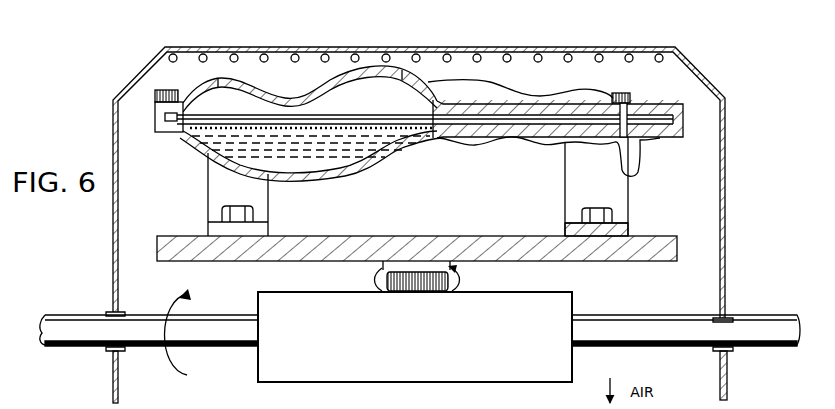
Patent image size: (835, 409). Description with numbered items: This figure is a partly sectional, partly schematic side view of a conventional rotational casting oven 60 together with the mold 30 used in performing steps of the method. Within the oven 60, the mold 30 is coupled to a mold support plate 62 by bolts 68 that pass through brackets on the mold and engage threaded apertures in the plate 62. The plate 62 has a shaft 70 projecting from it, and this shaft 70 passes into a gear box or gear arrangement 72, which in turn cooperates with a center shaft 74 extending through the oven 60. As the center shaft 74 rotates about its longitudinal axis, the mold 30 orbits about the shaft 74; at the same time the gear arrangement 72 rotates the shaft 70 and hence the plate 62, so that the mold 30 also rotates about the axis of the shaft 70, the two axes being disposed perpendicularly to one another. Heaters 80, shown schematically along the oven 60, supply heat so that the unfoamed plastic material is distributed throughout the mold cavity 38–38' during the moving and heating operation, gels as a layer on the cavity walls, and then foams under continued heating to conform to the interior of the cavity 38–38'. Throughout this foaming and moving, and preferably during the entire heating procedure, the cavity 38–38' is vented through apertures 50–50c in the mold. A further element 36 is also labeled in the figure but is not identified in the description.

The mold 30 is at (467, 78).
The mounting screws 36 is at (160, 92).
The cavity 38 is at (548, 164).
The cavity 38' is at (277, 149).
The aperture 50 is at (400, 72).
The aperture 50c is at (218, 78).
The oven 60 is at (741, 241).
The mold support plate 62 is at (496, 237).
The bolts 68 is at (222, 210).
The shaft 70 is at (413, 280).
The gear arrangement 72 is at (481, 347).
The center shaft 74 is at (215, 340).
The heaters 80 is at (598, 50).